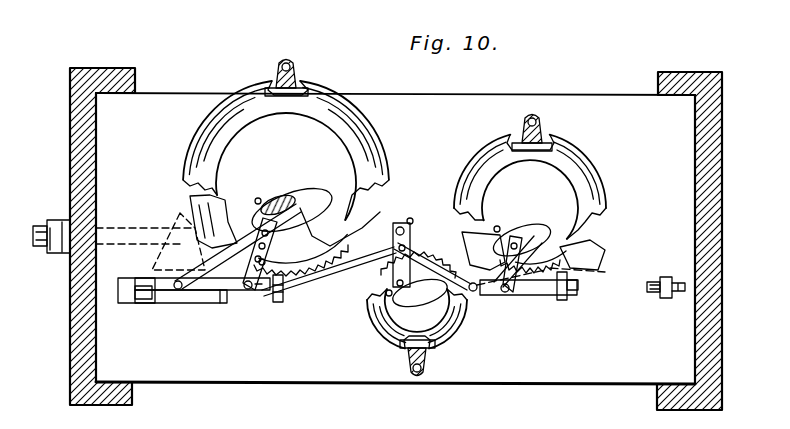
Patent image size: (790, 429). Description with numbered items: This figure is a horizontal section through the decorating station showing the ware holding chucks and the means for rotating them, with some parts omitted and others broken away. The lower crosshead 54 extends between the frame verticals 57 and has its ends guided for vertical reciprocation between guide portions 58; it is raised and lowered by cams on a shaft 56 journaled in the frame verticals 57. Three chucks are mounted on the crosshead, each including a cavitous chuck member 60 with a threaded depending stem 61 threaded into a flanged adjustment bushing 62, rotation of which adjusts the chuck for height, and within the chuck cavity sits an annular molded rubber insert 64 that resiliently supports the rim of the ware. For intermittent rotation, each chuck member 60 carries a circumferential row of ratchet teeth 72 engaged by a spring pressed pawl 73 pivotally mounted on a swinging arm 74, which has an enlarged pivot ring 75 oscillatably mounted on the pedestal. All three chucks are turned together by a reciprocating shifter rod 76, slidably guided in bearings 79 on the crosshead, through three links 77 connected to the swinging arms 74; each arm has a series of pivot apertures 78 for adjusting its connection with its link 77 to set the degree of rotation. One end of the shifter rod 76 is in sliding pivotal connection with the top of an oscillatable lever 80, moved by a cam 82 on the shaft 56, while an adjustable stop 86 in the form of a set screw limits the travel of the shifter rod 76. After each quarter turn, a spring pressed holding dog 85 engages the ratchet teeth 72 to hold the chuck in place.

The lower crosshead 54 is at (230, 385).
The shaft 56 is at (37, 230).
The frame verticals 57 is at (76, 292).
The guide portions 58 is at (116, 84).
The chuck member 60 is at (190, 197).
The threaded depending stem 61 is at (286, 200).
The flanged adjustment bushing 62 is at (300, 212).
The annular molded rubber insert 64 is at (378, 148).
The ratchet teeth 72 is at (334, 277).
The spring pressed pawl 73 is at (262, 300).
The swinging arm 74 is at (300, 264).
The enlarged pivot ring 75 is at (256, 198).
The reciprocating shifter rod 76 is at (206, 292).
The links 77 is at (262, 250).
The pivot apertures 78 is at (258, 262).
The bearings 79 is at (279, 306).
The oscillatable lever 80 is at (138, 305).
The cam 82 is at (173, 222).
The spring pressed holding dog 85 is at (276, 72).
The adjustable stop 86 is at (662, 277).